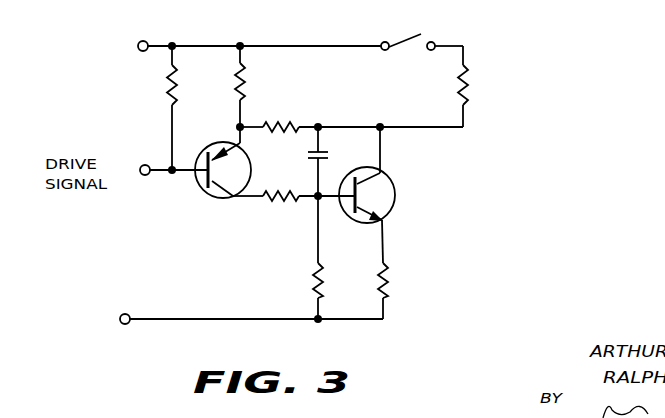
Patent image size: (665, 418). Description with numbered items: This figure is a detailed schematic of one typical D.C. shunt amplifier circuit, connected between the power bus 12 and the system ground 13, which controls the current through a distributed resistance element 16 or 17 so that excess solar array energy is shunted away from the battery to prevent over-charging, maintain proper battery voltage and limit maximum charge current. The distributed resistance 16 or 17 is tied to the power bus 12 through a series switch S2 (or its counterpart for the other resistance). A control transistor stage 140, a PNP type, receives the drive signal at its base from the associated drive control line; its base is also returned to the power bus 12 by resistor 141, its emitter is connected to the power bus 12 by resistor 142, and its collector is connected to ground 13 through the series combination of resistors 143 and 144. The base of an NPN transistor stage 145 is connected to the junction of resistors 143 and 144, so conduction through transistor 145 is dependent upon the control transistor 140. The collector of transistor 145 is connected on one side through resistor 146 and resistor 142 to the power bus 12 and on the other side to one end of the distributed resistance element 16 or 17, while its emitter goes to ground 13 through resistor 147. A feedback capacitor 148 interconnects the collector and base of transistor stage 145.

The power bus line 12 is at (86, 50).
The ground line 13 is at (74, 332).
The resistance element 16 is at (549, 95).
The resistance element 17 is at (472, 98).
The series switch S2 is at (410, 48).
The control transistor stage 140 is at (236, 200).
The resistor 141 is at (169, 77).
The resistor 142 is at (246, 82).
The resistor 143 is at (268, 204).
The resistor 144 is at (314, 265).
The NPN transistor stage 145 is at (396, 197).
The resistor 146 is at (283, 122).
The resistor 147 is at (391, 290).
The feedback capacitor 148 is at (323, 151).